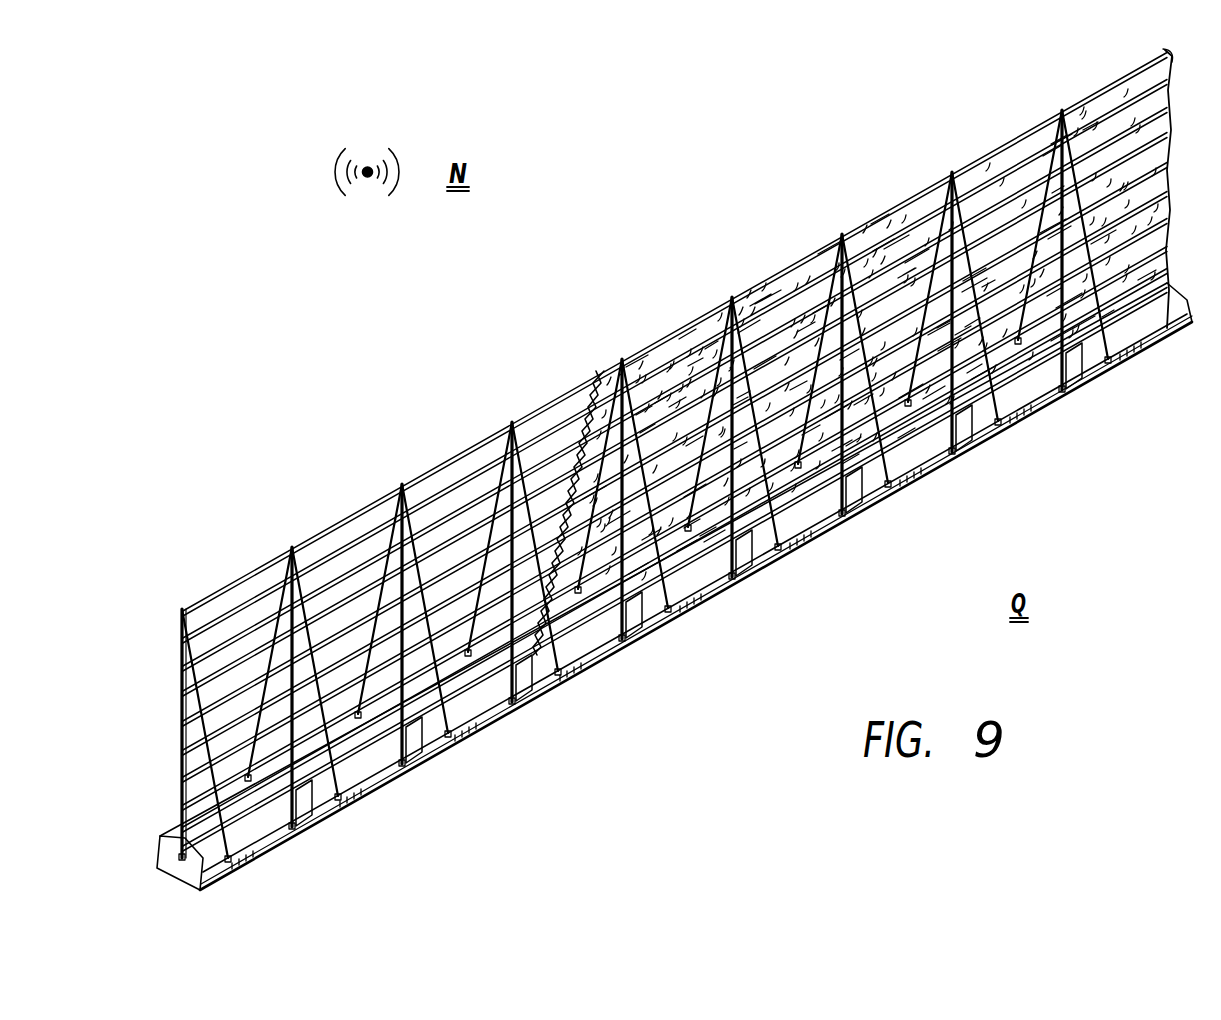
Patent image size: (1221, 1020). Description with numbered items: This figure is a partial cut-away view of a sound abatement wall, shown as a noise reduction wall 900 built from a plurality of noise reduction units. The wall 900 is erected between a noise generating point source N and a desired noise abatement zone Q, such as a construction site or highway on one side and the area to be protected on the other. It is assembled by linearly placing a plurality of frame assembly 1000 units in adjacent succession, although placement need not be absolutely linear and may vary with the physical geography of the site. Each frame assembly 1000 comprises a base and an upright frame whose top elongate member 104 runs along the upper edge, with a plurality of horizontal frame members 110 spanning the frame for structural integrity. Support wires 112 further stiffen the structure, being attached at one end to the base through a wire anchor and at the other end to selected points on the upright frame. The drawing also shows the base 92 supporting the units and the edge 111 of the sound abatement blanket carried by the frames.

The noise reduction wall 900 is at (307, 382).
The concrete barrier base 92 is at (170, 868).
The top elongate member 104 is at (258, 565).
The horizontal frame members 110 is at (207, 665).
The support wires 112 is at (190, 795).
The net edge 111 is at (614, 380).
The frame assembly 1000 is at (303, 852).